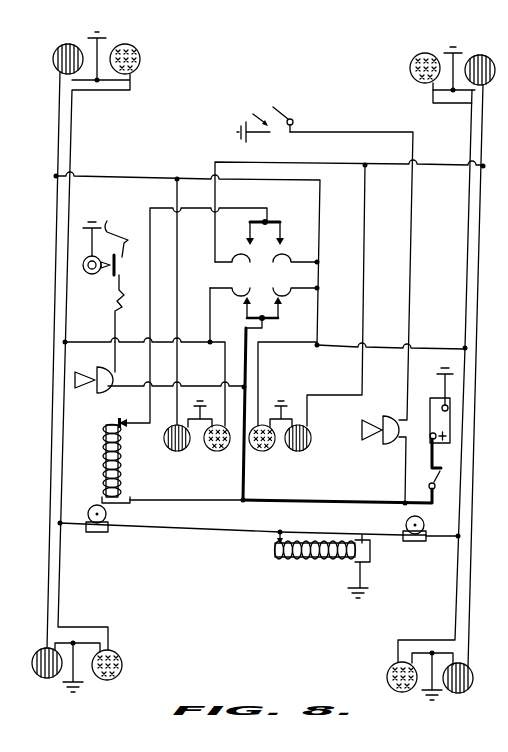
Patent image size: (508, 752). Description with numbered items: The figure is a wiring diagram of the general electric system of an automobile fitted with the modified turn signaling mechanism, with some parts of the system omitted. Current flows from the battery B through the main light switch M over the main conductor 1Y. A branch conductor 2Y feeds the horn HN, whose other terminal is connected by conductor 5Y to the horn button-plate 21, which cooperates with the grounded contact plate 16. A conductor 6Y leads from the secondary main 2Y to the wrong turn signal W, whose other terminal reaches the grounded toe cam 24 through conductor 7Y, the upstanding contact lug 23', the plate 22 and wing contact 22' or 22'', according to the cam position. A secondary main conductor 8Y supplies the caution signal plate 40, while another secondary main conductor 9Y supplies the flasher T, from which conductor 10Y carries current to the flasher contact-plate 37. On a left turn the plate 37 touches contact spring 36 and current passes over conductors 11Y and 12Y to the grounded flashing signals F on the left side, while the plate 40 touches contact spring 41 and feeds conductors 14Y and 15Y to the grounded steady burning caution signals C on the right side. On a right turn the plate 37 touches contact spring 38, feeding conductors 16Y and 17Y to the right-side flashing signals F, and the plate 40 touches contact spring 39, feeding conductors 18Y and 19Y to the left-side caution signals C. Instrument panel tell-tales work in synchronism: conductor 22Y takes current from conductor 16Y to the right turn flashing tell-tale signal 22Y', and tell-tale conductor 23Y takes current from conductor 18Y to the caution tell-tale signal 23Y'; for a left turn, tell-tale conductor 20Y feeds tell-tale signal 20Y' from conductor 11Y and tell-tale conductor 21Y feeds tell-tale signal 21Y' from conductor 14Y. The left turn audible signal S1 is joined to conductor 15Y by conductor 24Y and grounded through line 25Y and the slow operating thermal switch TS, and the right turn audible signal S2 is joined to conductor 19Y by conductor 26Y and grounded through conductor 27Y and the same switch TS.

The flashing signals F is at (68, 42).
The steady burning caution signals C is at (132, 42).
The main conductor 1Y is at (312, 493).
The branch conductor 2Y is at (402, 458).
The conductor 5Y is at (331, 128).
The conductor 6Y is at (190, 378).
The conductor 7Y is at (118, 356).
The secondary main conductor 8Y is at (245, 474).
The secondary main conductor 9Y is at (142, 491).
The secondary main conductor 10Y is at (232, 209).
The conductor 11Y is at (452, 164).
The conductor 12Y is at (484, 137).
The conductor 14Y is at (72, 340).
The conductor 15Y is at (103, 100).
The conductor 16Y is at (108, 170).
The conductor 17Y is at (57, 130).
The conductor 18Y is at (317, 306).
The conductor 19Y is at (457, 105).
The tell-tale conductor 20Y is at (355, 295).
The tell-tale conductor 21Y is at (211, 384).
The conductor 22Y is at (157, 302).
The tell-tale conductor 23Y is at (287, 384).
The conductor 24Y is at (60, 523).
The line 25Y is at (240, 523).
The conductor 26Y is at (432, 521).
The conductor 27Y is at (342, 524).
The tell-tale signal 20Y' is at (304, 446).
The tell-tale signal 21Y' is at (214, 446).
The tell-tale signal 22Y' is at (183, 432).
The tell-tale signal 23Y' is at (269, 434).
The grounded contact plate 16 is at (253, 125).
The horn button-plate 21 is at (289, 106).
The plate 22 is at (129, 265).
The wing contact 22' is at (119, 237).
The wing contact 22'' is at (130, 308).
The wrong turn signal contact lug 23' is at (92, 282).
The toe cam 24 is at (88, 256).
The contact spring 36 is at (240, 255).
The flasher contact-plate 37 is at (276, 218).
The contact spring 38 is at (285, 251).
The contact spring 39 is at (280, 298).
The caution signal plate 40 is at (271, 322).
The contact spring 41 is at (242, 296).
The wrong turn signal W is at (97, 370).
The horn HN is at (366, 420).
The flasher T is at (102, 439).
The slow operating thermal switch TS is at (266, 550).
The battery B is at (441, 405).
The main light switch M is at (441, 482).
The audible signal S1 is at (86, 540).
The audible signal S2 is at (419, 546).